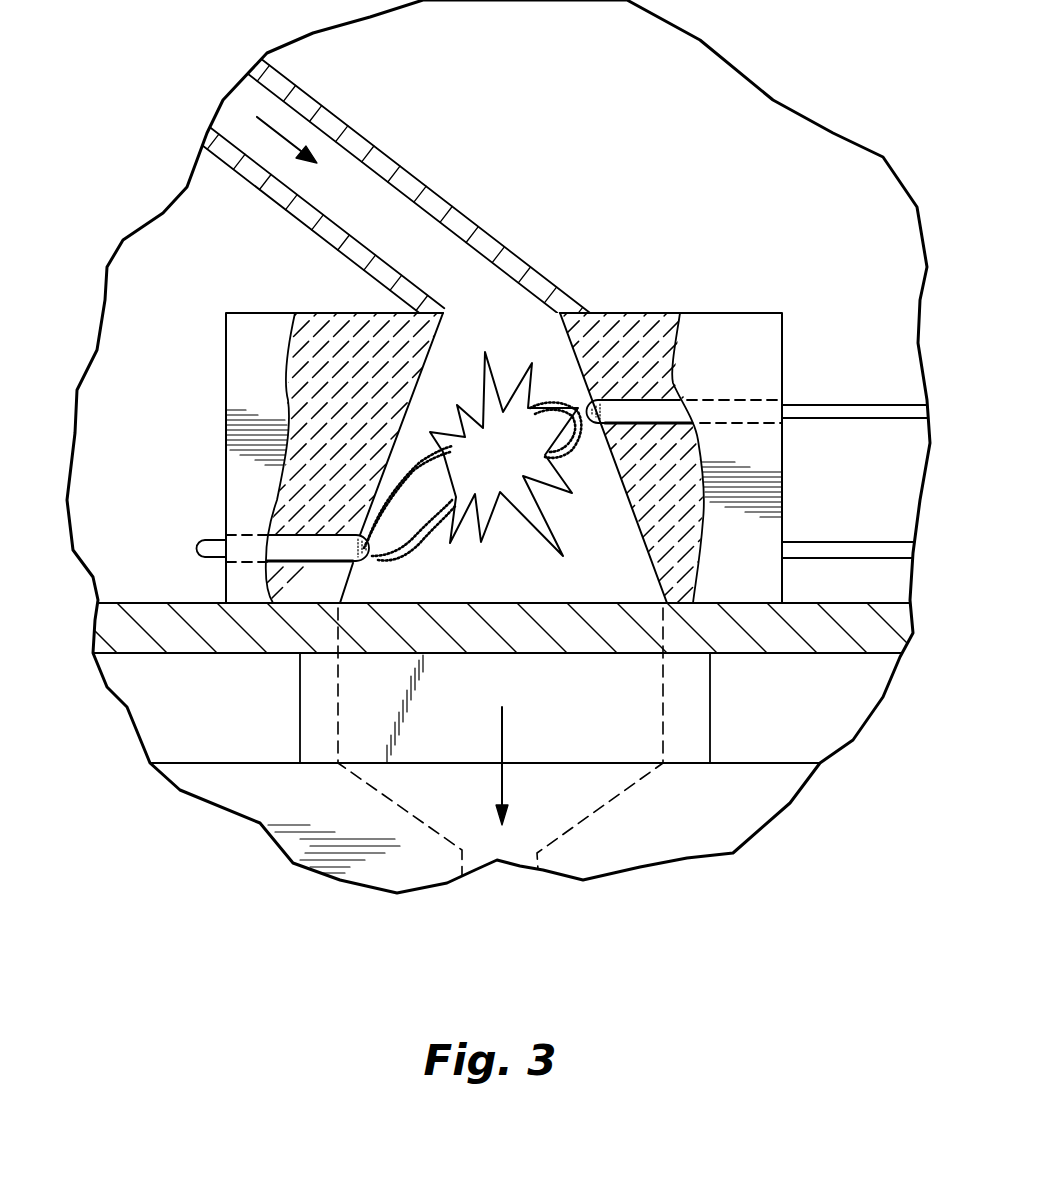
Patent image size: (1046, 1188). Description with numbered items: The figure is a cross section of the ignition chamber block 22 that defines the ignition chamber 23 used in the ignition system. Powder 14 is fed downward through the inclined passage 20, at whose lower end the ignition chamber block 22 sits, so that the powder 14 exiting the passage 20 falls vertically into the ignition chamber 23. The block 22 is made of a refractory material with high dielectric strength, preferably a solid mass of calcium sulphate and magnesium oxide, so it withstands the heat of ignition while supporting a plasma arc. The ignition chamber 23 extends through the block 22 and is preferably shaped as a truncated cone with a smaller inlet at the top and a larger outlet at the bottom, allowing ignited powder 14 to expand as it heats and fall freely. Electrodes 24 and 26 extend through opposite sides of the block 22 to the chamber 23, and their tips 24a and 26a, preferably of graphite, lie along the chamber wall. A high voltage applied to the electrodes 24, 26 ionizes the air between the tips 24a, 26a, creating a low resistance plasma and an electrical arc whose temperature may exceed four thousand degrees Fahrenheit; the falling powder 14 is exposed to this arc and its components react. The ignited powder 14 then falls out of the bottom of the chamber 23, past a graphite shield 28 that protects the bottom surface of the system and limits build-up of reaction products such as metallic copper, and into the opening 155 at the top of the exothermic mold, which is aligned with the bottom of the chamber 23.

The powder 14 is at (378, 203).
The passage 20 is at (263, 185).
The ignition chamber block 22 is at (735, 285).
The ignition chamber 23 is at (593, 575).
The electrode 24 is at (648, 398).
The electrode tip 24a is at (599, 398).
The electrode 26 is at (290, 548).
The electrode tip 26a is at (371, 562).
The graphite shield 28 is at (700, 727).
The opening 155 is at (495, 858).